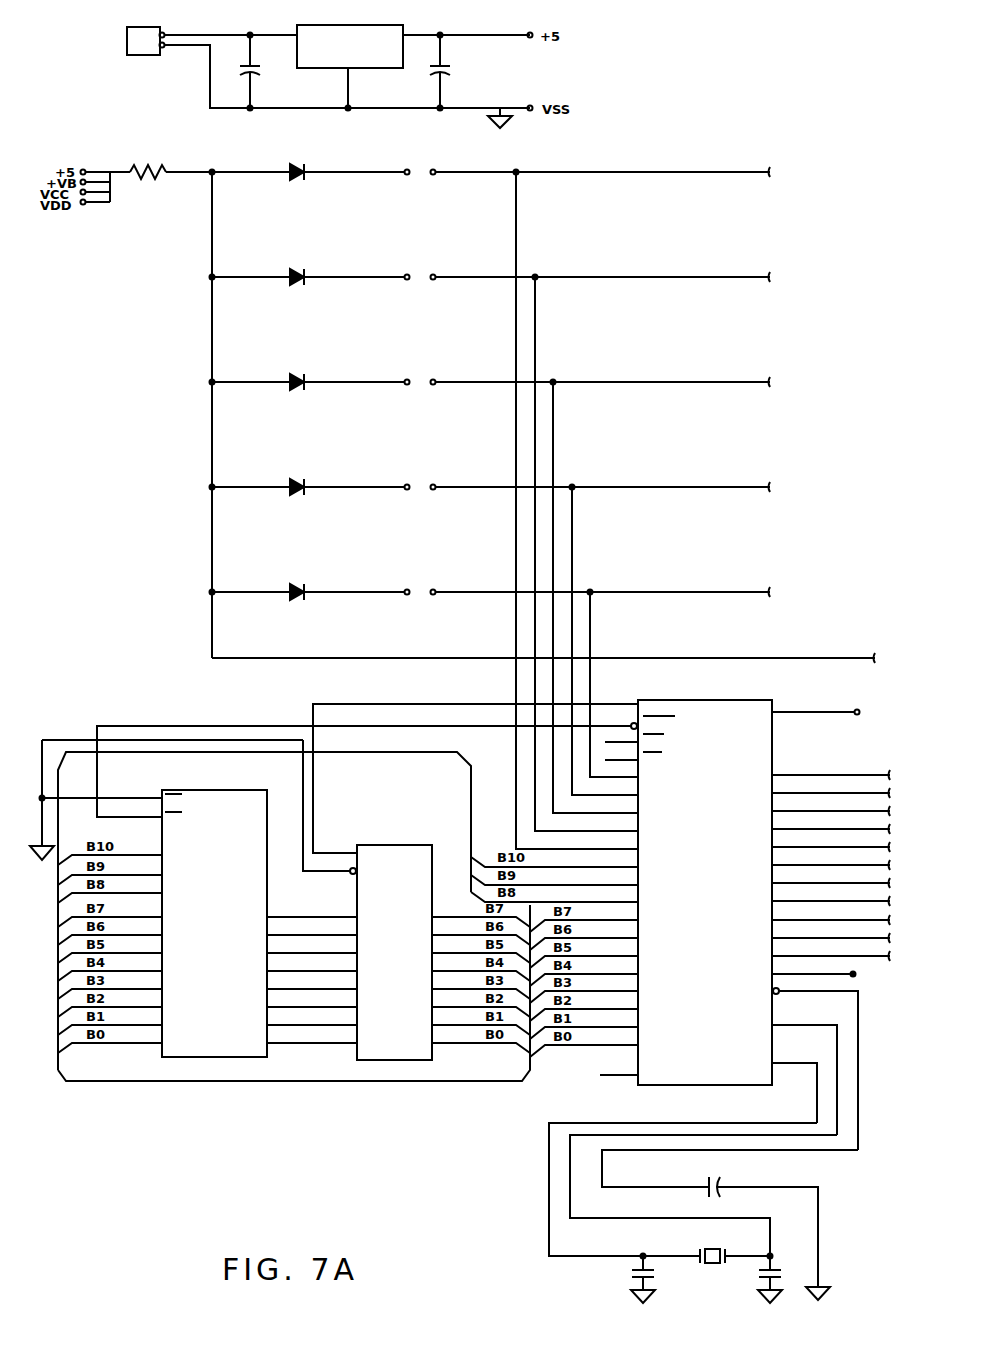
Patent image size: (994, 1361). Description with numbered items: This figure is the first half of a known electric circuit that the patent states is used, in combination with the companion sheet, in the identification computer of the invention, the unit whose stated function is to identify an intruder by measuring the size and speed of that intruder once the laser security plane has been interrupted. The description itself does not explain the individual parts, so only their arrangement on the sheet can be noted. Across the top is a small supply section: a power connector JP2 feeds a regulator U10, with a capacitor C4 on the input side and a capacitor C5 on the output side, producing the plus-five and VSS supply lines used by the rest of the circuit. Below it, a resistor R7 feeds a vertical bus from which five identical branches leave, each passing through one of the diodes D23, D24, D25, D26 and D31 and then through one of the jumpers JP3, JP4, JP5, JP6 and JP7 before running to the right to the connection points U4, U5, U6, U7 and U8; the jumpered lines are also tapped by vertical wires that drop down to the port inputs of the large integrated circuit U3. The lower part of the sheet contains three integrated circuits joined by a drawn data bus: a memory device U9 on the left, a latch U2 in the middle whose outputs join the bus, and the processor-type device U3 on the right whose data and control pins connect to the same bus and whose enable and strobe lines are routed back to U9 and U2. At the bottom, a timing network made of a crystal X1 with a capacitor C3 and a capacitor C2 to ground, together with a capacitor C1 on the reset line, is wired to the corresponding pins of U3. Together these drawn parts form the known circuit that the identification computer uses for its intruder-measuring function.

The power connector JP2 is at (136, 44).
The 7805 voltage regulator U10 is at (349, 54).
The 470uF/16V capacitor C4 is at (285, 72).
The 470uF/16V capacitor C5 is at (480, 72).
The 10K resistor R7 is at (161, 175).
The IN4148 diode D23 is at (308, 174).
The IN4148 diode D24 is at (308, 279).
The IN4148 diode D25 is at (308, 384).
The IN4148 diode D26 is at (308, 489).
The IN4148 diode D31 is at (308, 594).
The jumper JP3 is at (453, 174).
The jumper JP4 is at (453, 279).
The jumper JP5 is at (453, 384).
The jumper JP6 is at (453, 489).
The jumper JP7 is at (453, 594).
The S1C4 connector U4 is at (603, 191).
The S1C4 connector U5 is at (603, 296).
The S1C4 connector U6 is at (603, 401).
The S1C4 connector U7 is at (603, 506).
The S1C4 connector U8 is at (603, 611).
The 8748 microcontroller U3 is at (745, 914).
The 2732 EPROM U9 is at (217, 924).
The 74HC373 latch U2 is at (396, 952).
The 1uF/16V capacitor C1 is at (694, 1185).
The 6.00MHz crystal X1 is at (698, 1258).
The 20pF capacitor C3 is at (626, 1279).
The 20pF capacitor C2 is at (785, 1279).